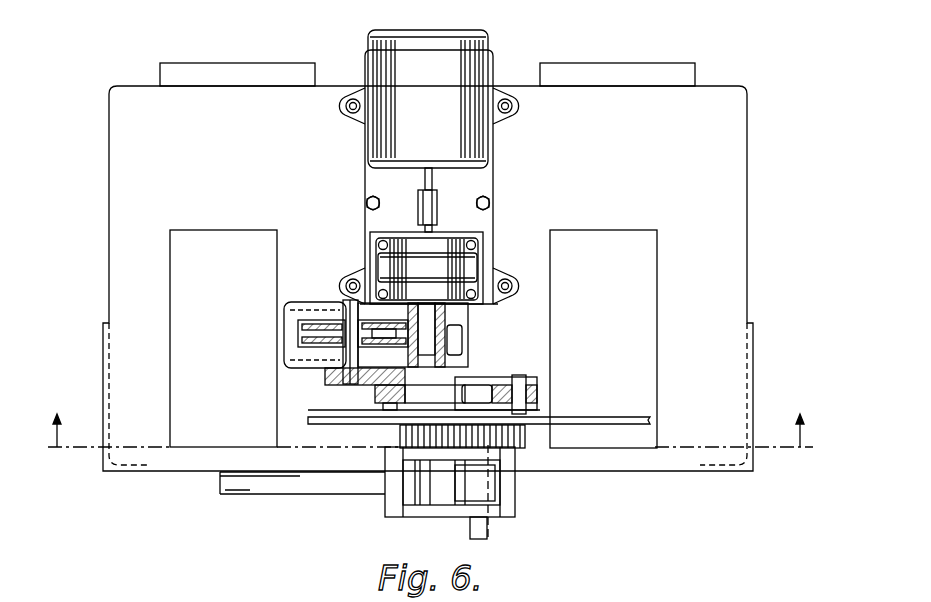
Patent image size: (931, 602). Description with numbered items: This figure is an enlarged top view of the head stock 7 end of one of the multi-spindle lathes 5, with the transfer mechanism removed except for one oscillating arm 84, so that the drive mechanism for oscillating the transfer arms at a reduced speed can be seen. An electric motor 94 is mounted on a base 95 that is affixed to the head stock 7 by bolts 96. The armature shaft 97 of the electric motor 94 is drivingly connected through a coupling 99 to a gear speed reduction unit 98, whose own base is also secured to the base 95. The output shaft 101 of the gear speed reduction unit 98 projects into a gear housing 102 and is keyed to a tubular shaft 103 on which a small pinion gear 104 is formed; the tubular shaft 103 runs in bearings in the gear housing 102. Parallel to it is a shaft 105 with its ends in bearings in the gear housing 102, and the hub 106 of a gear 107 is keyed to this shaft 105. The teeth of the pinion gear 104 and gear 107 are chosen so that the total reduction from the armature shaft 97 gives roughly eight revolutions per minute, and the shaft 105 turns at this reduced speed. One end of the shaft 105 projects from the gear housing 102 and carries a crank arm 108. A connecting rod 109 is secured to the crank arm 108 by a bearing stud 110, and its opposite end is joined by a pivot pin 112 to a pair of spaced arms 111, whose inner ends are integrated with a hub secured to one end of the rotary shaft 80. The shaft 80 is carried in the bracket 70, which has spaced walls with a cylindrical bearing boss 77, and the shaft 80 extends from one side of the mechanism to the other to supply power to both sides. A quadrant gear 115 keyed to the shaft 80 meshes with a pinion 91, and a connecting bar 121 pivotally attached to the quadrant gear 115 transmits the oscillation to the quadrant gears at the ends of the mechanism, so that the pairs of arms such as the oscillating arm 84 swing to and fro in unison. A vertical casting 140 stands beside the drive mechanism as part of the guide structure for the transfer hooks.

The multi-spindle lathe 5 is at (731, 153).
The head stock 7 is at (747, 242).
The bracket 70 is at (515, 495).
The bearing boss 77 is at (492, 490).
The shaft 80 is at (468, 532).
The oscillating arm 84 is at (285, 485).
The pinion 91 is at (400, 450).
The electric motor 94 is at (462, 70).
The base 95 is at (486, 178).
The bolts 96 is at (350, 102).
The armature shaft 97 is at (432, 180).
The gear speed reduction unit 98 is at (470, 258).
The coupling 99 is at (420, 198).
The output shaft 101 is at (430, 323).
The gear housing 102 is at (315, 300).
The tubular shaft 103 is at (445, 355).
The pinion gear 104 is at (452, 330).
The shaft 105 is at (352, 367).
The hub 106 is at (345, 345).
The gear 107 is at (310, 333).
The crank arm 108 is at (385, 380).
The connecting rod 109 is at (443, 394).
The bearing stud 110 is at (382, 383).
The spaced arms 111 is at (530, 378).
The pivot pin 112 is at (520, 390).
The quadrant gear 115 is at (525, 448).
The connecting bar 121 is at (622, 422).
The vertical casting 140 is at (165, 306).